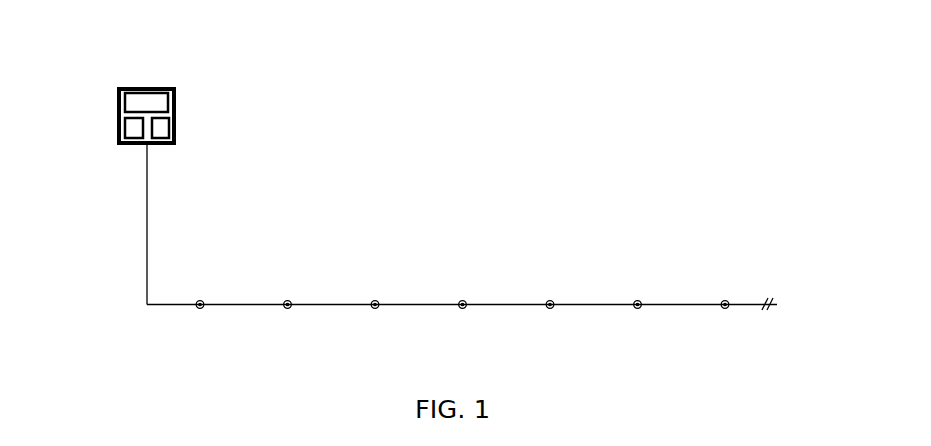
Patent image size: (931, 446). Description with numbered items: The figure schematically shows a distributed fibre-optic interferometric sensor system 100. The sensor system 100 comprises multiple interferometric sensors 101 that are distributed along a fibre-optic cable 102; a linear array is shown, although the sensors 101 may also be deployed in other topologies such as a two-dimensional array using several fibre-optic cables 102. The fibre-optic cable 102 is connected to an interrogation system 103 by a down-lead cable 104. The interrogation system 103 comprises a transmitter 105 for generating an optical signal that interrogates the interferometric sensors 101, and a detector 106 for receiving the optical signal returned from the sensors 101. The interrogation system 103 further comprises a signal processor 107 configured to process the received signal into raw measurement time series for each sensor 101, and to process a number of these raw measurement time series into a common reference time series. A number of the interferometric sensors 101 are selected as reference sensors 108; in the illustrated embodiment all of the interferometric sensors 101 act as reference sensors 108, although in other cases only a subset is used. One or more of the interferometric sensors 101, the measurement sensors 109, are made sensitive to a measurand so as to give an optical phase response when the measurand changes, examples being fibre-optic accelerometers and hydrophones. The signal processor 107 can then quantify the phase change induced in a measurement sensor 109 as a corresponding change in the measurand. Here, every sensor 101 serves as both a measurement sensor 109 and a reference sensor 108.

The distributed fibre-optic interferometric sensor system 100 is at (756, 109).
The interferometric sensors 101 is at (200, 304).
The fibre-optic cable 102 is at (167, 307).
The interrogation system 103 is at (163, 87).
The down-lead cable 104 is at (145, 192).
The transmitter 105 is at (172, 125).
The detector 106 is at (125, 127).
The signal processor 107 is at (143, 95).
The reference sensors 108 is at (200, 304).
The measurement sensors 109 is at (200, 304).